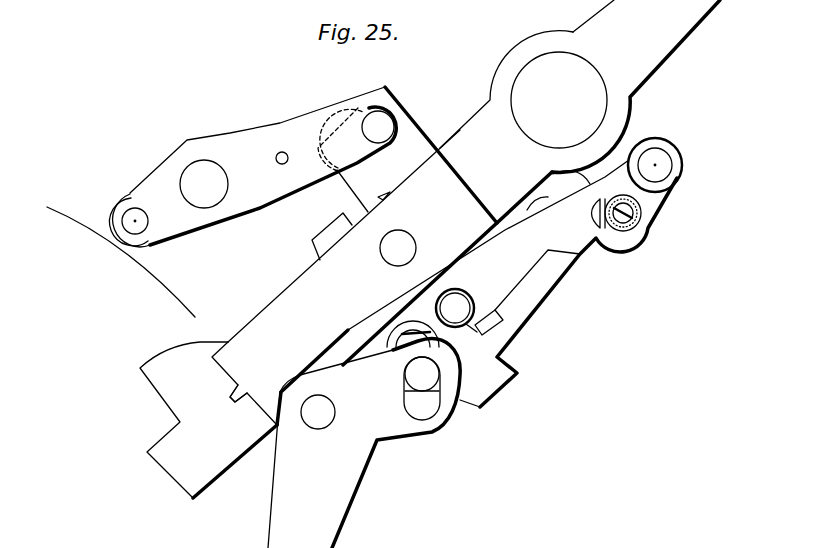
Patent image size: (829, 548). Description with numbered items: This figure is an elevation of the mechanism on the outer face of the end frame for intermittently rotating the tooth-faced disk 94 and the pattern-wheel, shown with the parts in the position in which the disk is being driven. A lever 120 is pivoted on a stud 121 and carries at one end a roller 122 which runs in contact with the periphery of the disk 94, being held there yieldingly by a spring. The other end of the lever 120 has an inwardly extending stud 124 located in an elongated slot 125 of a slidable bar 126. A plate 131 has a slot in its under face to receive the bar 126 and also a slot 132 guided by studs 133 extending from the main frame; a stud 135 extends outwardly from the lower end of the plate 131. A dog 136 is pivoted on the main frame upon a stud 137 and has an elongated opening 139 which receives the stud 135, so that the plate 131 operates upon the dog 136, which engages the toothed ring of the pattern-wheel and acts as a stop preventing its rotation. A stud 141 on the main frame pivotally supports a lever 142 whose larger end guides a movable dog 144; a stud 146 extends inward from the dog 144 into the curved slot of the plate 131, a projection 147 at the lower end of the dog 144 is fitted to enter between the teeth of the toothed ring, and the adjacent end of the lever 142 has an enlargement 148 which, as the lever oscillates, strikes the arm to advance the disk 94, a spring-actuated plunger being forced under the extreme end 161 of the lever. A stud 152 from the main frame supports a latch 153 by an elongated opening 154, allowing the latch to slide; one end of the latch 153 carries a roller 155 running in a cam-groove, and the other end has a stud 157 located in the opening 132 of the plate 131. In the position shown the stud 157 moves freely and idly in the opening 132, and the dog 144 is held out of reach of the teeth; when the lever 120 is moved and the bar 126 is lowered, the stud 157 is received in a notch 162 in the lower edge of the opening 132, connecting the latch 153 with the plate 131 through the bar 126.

The disk 94 is at (121, 262).
The lever 120 is at (263, 166).
The stud 121 is at (204, 184).
The roller 122 is at (120, 215).
The stud 124 is at (378, 127).
The elongated slot 125 is at (356, 189).
The slidable bar 126 is at (344, 236).
The plate 131 is at (568, 292).
The slot 132 is at (447, 268).
The studs 133 is at (402, 326).
The stud 135 is at (422, 374).
The dog 136 is at (364, 443).
The stud 137 is at (318, 412).
The elongated opening 139 is at (422, 388).
The stud 141 is at (559, 100).
The lever 142 is at (580, 86).
The movable dog 144 is at (354, 256).
The stud 146 is at (398, 248).
The projection 147 is at (233, 401).
The enlargement 148 is at (184, 420).
The stud 152 is at (637, 226).
The latch 153 is at (488, 245).
The elongated opening 154 is at (598, 213).
The roller 155 is at (673, 165).
The stud 157 is at (455, 308).
The extreme end 161 is at (224, 461).
The notch 162 is at (491, 327).